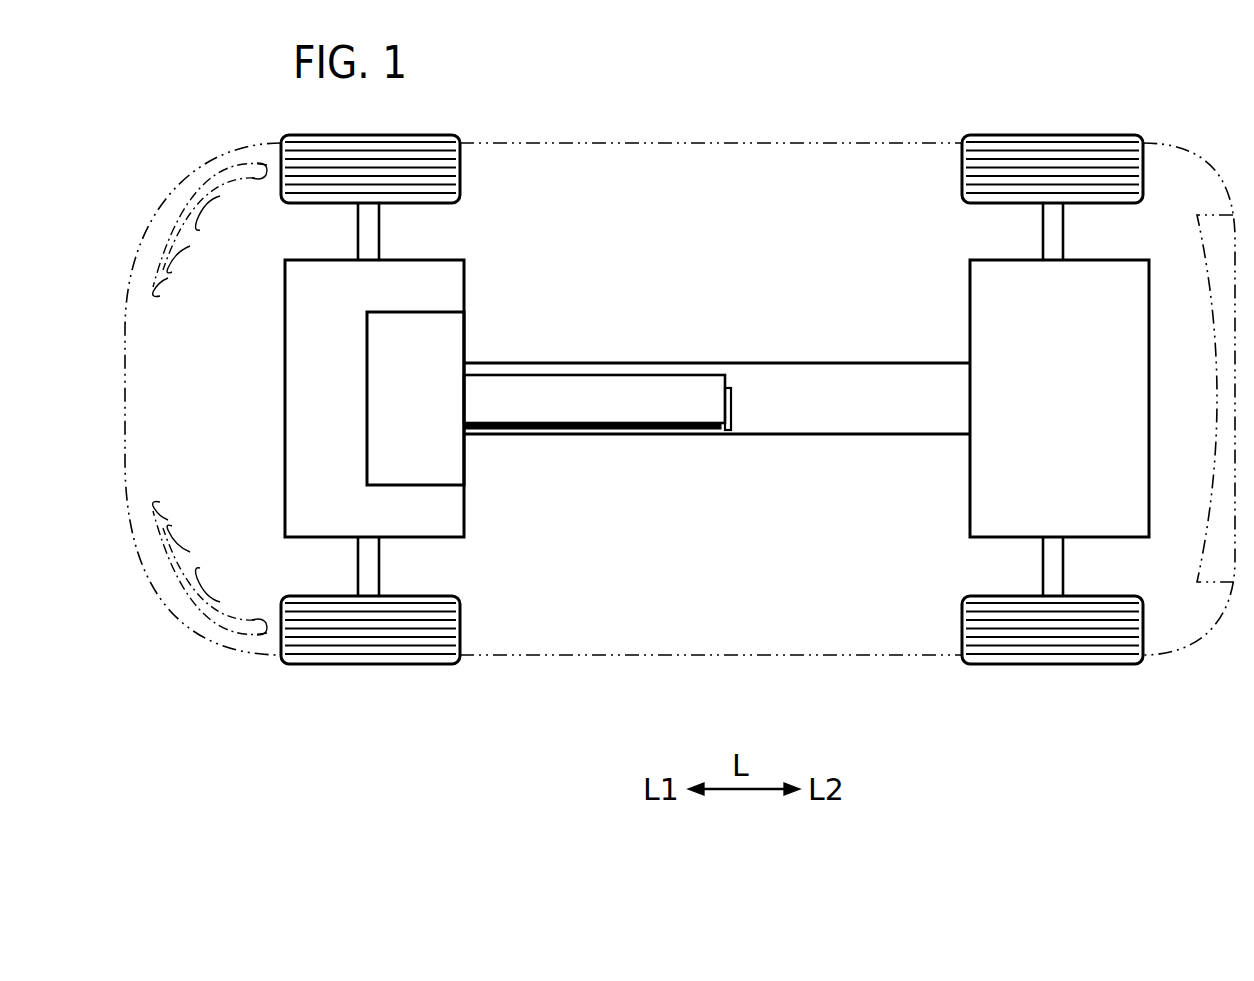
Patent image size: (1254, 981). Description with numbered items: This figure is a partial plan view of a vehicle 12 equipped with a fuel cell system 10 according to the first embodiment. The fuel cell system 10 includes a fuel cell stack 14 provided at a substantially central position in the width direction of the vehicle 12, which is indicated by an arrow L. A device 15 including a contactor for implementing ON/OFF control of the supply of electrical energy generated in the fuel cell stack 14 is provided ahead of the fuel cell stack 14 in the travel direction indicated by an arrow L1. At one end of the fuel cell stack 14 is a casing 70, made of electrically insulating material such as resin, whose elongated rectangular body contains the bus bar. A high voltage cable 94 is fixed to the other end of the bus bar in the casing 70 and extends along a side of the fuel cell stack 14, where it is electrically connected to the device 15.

The fuel cell system 10 is at (717, 382).
The vehicle 12 is at (786, 148).
The fuel cell stack 14 is at (577, 372).
The device 15 is at (442, 338).
The casing 70 is at (735, 403).
The high voltage cable 94 is at (653, 428).